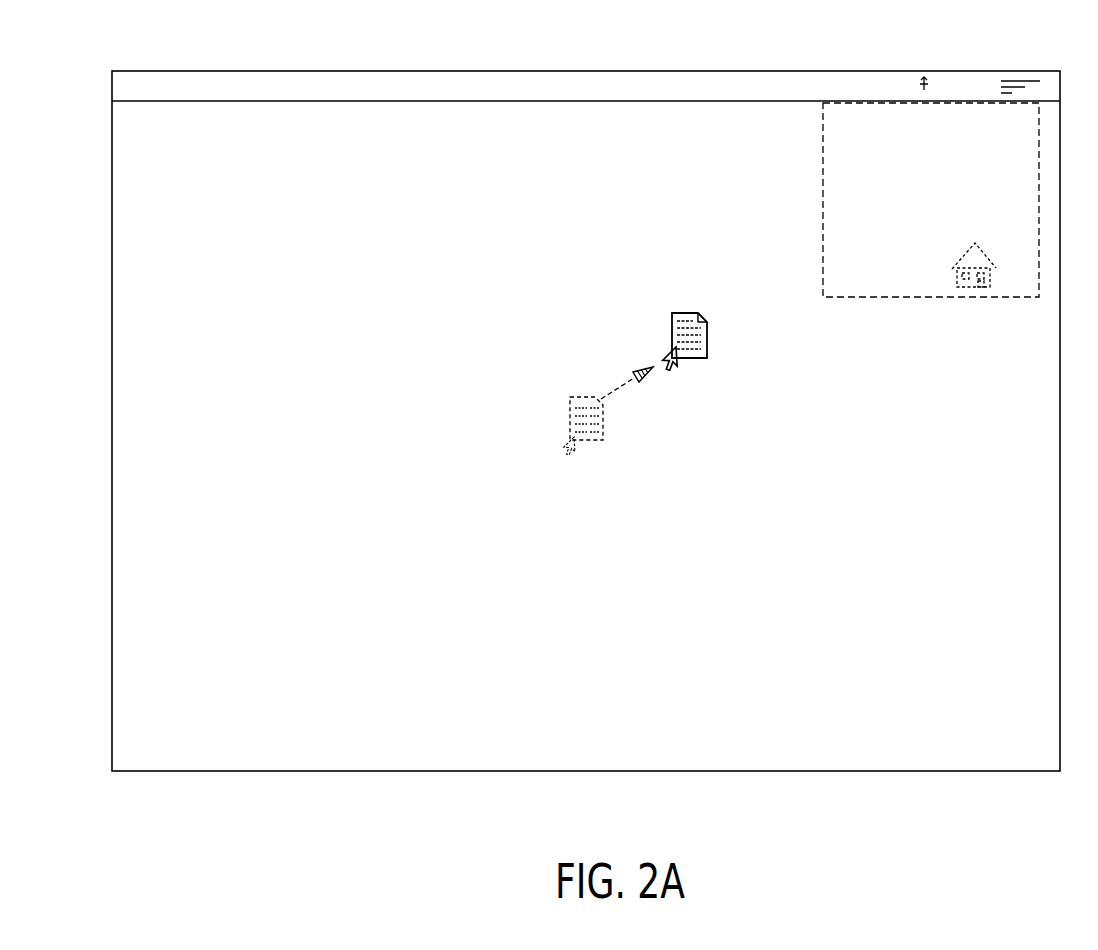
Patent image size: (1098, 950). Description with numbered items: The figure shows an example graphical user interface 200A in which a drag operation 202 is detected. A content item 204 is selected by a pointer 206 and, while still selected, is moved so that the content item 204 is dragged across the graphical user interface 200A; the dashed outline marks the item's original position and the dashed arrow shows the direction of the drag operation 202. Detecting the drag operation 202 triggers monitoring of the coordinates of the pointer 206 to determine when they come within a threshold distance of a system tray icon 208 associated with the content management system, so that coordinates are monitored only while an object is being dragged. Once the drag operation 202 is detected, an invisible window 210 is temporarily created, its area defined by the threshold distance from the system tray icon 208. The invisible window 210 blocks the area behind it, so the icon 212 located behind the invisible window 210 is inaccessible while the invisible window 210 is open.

The graphical user interface 200A is at (897, 771).
The drag operation 202 is at (622, 390).
The content item 204 is at (708, 335).
The pointer 206 is at (665, 350).
The system tray icon 208 is at (924, 80).
The invisible window 210 is at (822, 130).
The icon 212 is at (948, 264).